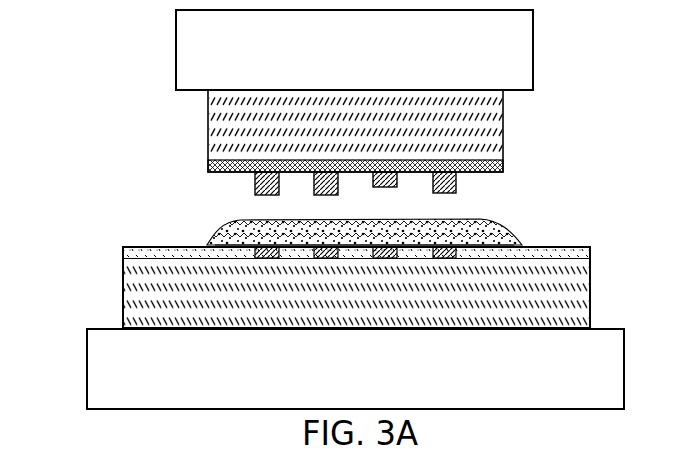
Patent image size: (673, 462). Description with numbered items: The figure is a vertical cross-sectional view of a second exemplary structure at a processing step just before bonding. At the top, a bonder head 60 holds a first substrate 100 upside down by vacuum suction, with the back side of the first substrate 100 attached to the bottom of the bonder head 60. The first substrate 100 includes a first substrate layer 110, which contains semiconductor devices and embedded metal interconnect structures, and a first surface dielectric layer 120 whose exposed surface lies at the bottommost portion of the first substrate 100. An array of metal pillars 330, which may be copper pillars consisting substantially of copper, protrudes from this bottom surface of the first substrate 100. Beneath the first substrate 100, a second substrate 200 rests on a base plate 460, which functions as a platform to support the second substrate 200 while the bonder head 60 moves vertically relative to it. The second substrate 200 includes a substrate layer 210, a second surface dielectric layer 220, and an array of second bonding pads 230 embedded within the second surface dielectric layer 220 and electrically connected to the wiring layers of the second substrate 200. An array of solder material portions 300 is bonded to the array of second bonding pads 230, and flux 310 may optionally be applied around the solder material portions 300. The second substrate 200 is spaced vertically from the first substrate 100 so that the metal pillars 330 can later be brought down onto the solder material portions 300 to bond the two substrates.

The bonder head 60 is at (366, 60).
The first substrate 100 is at (522, 97).
The first substrate layer 110 is at (327, 130).
The first surface dielectric layer 120 is at (208, 167).
The array of metal pillars 330 is at (448, 158).
The array of solder material portions 300 is at (497, 225).
The flux 310 is at (514, 243).
The second substrate 200 is at (608, 247).
The second surface dielectric layer 220 is at (123, 250).
The array of second bonding pads 230 is at (266, 258).
The substrate core 210 is at (370, 302).
The base plate 460 is at (373, 378).